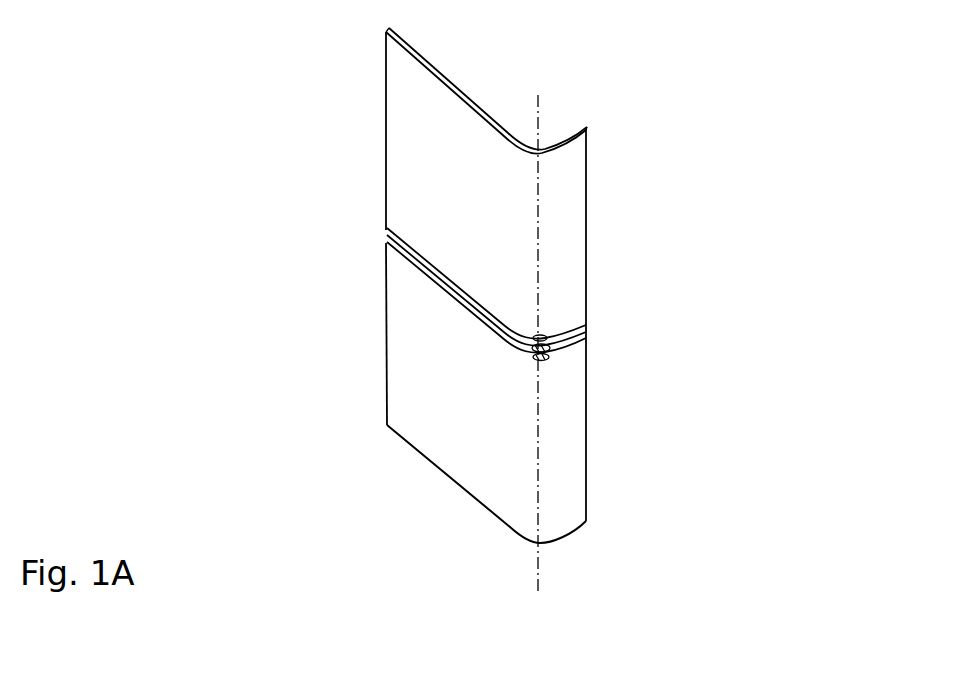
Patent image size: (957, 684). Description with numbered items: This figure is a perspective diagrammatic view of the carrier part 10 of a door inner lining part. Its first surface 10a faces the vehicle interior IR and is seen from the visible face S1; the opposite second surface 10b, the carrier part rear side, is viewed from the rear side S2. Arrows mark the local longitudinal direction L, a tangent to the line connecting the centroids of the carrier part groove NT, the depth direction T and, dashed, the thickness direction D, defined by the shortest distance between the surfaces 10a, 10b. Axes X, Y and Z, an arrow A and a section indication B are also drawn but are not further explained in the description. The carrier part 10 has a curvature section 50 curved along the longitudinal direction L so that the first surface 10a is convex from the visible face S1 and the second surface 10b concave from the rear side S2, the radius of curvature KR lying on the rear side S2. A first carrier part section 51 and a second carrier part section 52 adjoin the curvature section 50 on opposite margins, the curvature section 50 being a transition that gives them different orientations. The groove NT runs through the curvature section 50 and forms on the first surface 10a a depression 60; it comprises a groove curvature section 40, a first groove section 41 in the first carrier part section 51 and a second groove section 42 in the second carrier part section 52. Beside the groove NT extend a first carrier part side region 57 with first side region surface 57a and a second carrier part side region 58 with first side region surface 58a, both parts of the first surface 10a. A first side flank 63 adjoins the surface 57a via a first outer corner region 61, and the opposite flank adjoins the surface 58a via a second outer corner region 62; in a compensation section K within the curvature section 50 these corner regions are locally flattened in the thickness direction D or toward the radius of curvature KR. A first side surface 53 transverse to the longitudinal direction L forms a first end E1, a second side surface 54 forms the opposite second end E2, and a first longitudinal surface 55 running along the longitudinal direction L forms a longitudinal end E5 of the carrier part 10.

The carrier part 10 is at (587, 195).
The first surface of the carrier part 10a is at (407, 115).
The second surface of the carrier part 10b is at (432, 73).
The groove curvature section 40 is at (525, 363).
The first groove section 41 is at (398, 258).
The second groove section 42 is at (558, 321).
The curvature section 50 is at (541, 497).
The first carrier part section 51 is at (386, 177).
The second carrier part section 52 is at (413, 442).
The first side surface 53 is at (386, 32).
The second side surface 54 is at (587, 132).
The first longitudinal surface 55 is at (470, 517).
The first carrier part side region 57 is at (395, 393).
The first side region surface 57a is at (468, 460).
The second carrier part side region 58 is at (411, 153).
The first side region surface 58a is at (403, 75).
The depression 60 is at (443, 288).
The first outer corner region 61 is at (418, 278).
The second outer corner region 62 is at (498, 328).
The first side flank 63 is at (460, 300).
The direction A is at (478, 338).
The section line B is at (568, 99).
The thickness direction D is at (398, 220).
The first end E1 is at (387, 390).
The second end E2 is at (588, 450).
The longitudinal end E5 is at (492, 540).
The compensation section K is at (550, 372).
The radius of curvature KR is at (544, 147).
The longitudinal direction L is at (438, 253).
The carrier part groove NT is at (565, 353).
The depth direction T is at (398, 220).
The interior IR is at (158, 127).
The visible face S1 is at (168, 379).
The rear side S2 is at (758, 230).
The X axis X is at (251, 289).
The Y axis Y is at (251, 289).
The Z axis Z is at (251, 192).